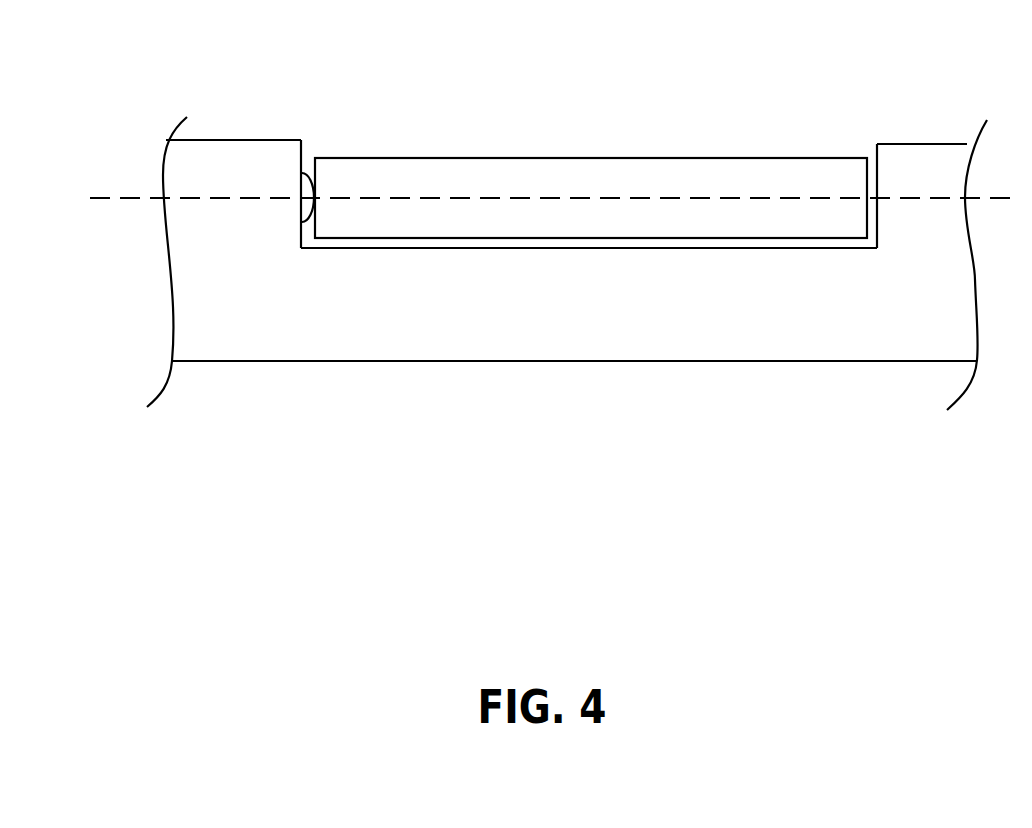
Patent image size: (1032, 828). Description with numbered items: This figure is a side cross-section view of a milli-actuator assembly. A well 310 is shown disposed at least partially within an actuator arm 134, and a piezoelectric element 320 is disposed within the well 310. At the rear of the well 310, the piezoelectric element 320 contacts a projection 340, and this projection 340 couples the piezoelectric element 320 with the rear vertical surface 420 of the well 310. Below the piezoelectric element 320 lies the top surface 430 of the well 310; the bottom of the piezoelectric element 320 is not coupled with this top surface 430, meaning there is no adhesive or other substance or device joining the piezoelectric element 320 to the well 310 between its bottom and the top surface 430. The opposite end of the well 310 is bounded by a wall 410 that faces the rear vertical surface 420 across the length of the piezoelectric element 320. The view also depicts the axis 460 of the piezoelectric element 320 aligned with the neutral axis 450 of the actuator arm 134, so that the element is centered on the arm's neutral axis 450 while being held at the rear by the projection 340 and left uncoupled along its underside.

The actuator arm 134 is at (193, 168).
The well 310 is at (580, 242).
The piezoelectric element 320 is at (595, 185).
The projection 340 is at (302, 208).
The pocket right wall 410 is at (877, 233).
The rear vertical surface 420 is at (300, 145).
The top surface 430 is at (742, 250).
The neutral axis 450 is at (90, 198).
The axis 460 is at (373, 198).